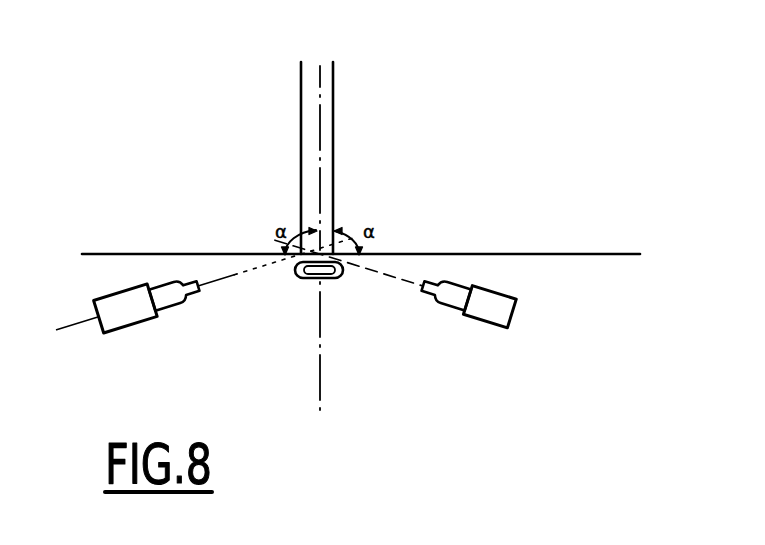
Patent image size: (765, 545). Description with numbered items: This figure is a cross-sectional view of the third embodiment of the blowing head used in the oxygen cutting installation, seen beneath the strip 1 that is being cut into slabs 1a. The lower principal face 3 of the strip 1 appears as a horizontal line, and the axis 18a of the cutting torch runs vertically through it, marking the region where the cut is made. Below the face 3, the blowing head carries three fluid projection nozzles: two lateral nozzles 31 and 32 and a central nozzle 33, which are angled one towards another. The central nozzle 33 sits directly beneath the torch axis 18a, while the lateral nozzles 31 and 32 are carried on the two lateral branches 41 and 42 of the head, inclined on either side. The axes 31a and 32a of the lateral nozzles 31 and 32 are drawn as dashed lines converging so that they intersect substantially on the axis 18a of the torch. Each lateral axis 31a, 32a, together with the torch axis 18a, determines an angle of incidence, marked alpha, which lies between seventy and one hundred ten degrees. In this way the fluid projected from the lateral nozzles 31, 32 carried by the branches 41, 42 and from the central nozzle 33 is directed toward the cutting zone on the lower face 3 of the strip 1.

The strip 1 is at (553, 72).
The slab 1a is at (328, 100).
The axis of the cutting torch 18a is at (321, 66).
The lower principal face 3 is at (622, 255).
The central nozzle 33 is at (301, 280).
The lateral nozzle 32 is at (163, 305).
The axis of lateral nozzle 32a is at (225, 277).
The lateral branch 41 is at (100, 316).
The lateral nozzle 31 is at (453, 298).
The axis of lateral nozzle 31a is at (389, 273).
The lateral branch 42 is at (507, 317).